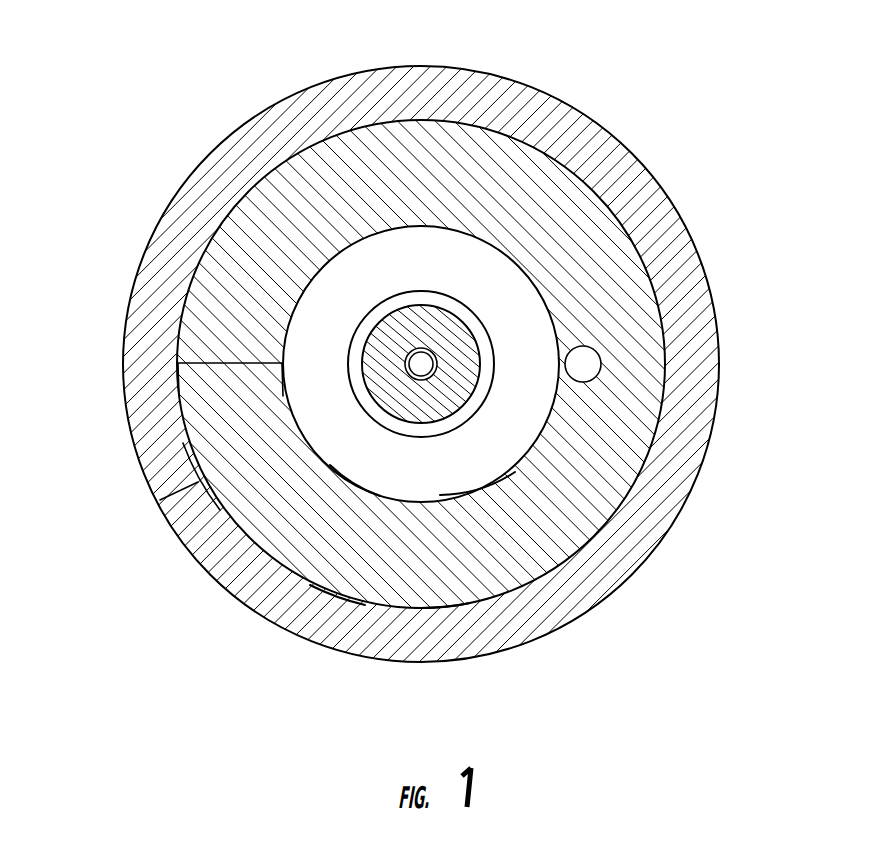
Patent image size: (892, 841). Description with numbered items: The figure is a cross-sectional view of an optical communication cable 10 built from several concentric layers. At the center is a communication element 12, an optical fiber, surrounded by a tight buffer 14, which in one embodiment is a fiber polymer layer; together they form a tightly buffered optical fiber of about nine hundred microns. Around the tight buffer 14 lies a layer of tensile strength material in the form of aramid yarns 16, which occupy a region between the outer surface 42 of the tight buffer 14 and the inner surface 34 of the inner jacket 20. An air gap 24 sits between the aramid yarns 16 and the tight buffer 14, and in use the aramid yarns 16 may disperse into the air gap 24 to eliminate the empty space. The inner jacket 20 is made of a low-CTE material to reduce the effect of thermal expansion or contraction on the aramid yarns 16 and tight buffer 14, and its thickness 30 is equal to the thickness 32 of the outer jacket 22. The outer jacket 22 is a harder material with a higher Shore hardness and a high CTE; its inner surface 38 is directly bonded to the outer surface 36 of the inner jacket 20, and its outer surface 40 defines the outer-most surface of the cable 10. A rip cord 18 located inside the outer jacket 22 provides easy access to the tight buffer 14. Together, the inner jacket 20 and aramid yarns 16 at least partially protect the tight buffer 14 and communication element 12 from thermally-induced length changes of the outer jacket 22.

The optical communication cable 10 is at (423, 420).
The communication element 12 is at (421, 362).
The tight buffer 14 is at (450, 327).
The aramid yarns 16 is at (508, 328).
The rip cord 18 is at (590, 355).
The inner jacket 20 is at (422, 420).
The outer jacket 22 is at (454, 420).
The air gap 24 is at (480, 393).
The thickness of inner jacket 30 is at (218, 352).
The thickness of outer jacket 32 is at (175, 478).
The inner surface of inner jacket 34 is at (352, 483).
The outer surface of inner jacket 36 is at (338, 597).
The inner surface of outer jacket 38 is at (443, 605).
The outer surface of outer jacket 40 is at (560, 630).
The outer surface of tight buffer 42 is at (480, 490).